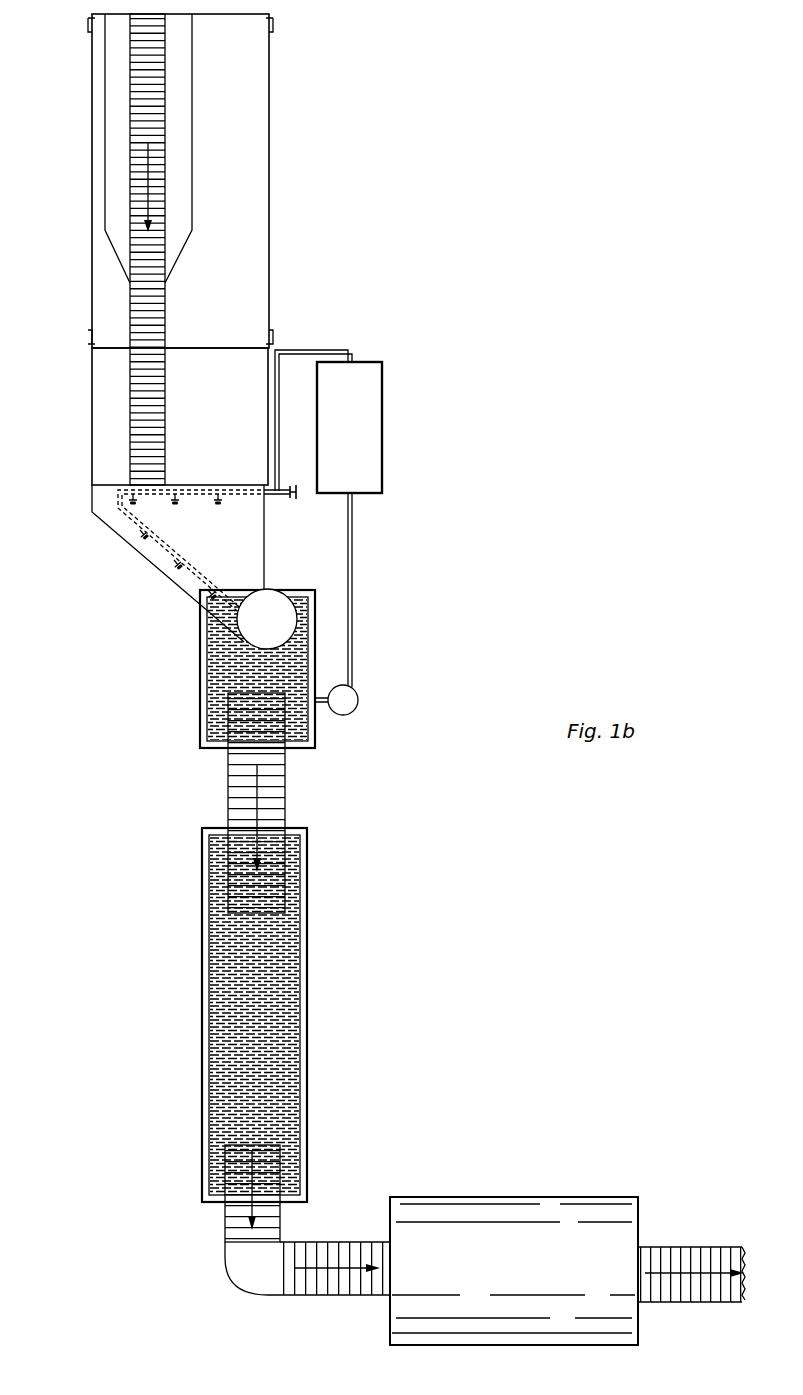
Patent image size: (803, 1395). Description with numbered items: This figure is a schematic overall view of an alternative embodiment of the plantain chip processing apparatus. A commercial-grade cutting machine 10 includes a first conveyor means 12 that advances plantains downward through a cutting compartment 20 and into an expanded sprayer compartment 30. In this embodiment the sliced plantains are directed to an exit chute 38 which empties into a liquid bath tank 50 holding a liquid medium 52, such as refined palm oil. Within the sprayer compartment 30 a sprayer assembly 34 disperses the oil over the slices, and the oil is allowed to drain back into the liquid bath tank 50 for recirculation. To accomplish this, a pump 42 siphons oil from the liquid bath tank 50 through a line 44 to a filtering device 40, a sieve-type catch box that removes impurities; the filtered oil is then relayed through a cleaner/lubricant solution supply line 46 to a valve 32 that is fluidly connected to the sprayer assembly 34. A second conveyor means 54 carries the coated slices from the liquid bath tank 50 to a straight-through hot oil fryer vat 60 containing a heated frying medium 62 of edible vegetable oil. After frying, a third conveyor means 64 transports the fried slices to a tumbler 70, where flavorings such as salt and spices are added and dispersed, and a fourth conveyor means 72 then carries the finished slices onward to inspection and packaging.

The cutting machine 10 is at (92, 140).
The first conveyor means 12 is at (148, 333).
The cutting compartment 20 is at (219, 443).
The sprayer compartment 30 is at (224, 553).
The valve 32 is at (285, 497).
The sprayer assembly 34 is at (250, 496).
The exit chute 38 is at (279, 629).
The filtering device 40 is at (361, 435).
The pump 42 is at (345, 700).
The line 44 is at (352, 598).
The cleaner/lubricant solution supply line 46 is at (314, 350).
The liquid bath tank 50 is at (200, 651).
The liquid medium 52 is at (270, 676).
The second conveyor means 54 is at (240, 795).
The hot oil fryer vat 60 is at (202, 1015).
The frying medium 62 is at (268, 1010).
The third conveyor means 64 is at (225, 1235).
The tumbler 70 is at (525, 1271).
The fourth conveyor means 72 is at (680, 1250).